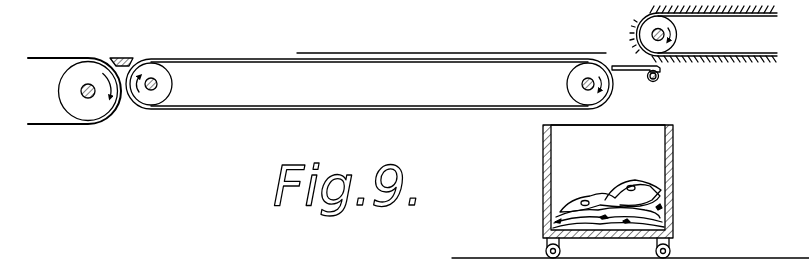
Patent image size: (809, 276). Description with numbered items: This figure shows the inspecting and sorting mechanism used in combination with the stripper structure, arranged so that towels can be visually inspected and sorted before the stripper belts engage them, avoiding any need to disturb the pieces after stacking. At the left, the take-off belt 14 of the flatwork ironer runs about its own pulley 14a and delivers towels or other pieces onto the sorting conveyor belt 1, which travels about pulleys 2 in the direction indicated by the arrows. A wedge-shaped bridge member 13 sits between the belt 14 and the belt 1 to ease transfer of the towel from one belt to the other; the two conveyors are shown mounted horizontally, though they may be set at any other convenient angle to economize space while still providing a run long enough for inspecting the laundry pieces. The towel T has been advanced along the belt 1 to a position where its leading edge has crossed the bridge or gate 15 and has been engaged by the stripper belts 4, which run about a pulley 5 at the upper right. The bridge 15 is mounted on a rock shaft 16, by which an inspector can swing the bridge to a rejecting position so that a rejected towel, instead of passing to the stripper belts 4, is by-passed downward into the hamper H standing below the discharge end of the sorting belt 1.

The sorting conveyor belt 1 is at (226, 109).
The pulleys 2 is at (152, 100).
The stripper belts 4 is at (752, 53).
The feed conveyor pulley 5 is at (672, 47).
The wedge-shaped bridge member 13 is at (125, 58).
The take-off belt 14 is at (61, 128).
The return belt pulley 14a is at (68, 74).
The bridge 15 is at (636, 80).
The rock shaft 16 is at (660, 77).
The towel T is at (443, 53).
The hamper H is at (667, 152).